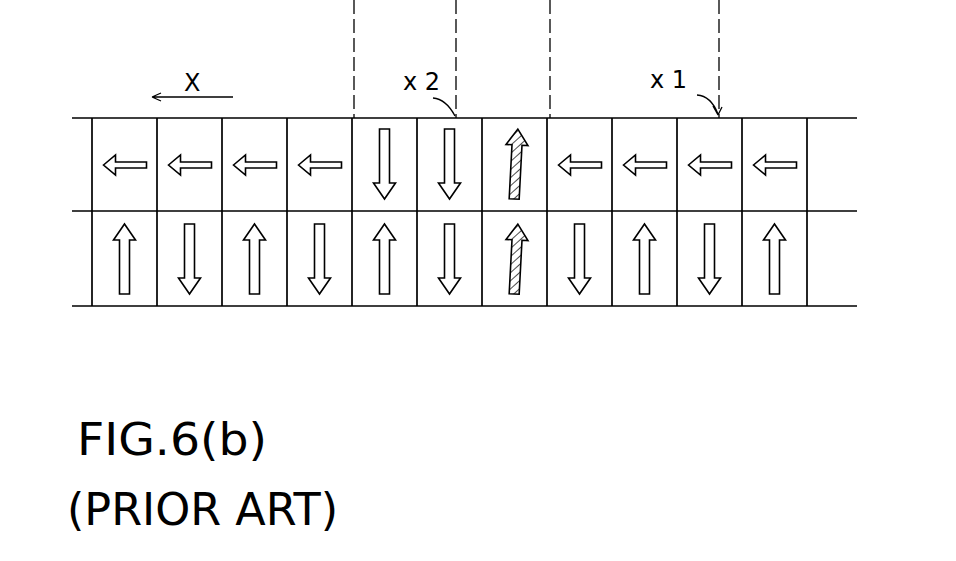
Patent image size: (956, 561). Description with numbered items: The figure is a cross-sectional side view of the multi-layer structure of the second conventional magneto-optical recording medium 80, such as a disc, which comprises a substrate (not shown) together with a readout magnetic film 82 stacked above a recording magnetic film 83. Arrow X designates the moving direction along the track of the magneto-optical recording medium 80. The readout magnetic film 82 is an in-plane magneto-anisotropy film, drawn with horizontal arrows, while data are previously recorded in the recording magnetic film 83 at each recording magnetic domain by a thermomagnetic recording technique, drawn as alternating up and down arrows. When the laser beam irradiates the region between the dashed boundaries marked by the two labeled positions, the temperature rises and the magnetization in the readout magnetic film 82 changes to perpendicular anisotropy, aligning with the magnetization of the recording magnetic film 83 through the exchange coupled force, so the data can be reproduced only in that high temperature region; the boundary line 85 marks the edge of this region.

The magneto-optical recording medium 80 is at (108, 81).
The readout magnetic film 82 is at (832, 163).
The recording magnetic film 83 is at (828, 242).
The domain boundary line 85 is at (723, 72).